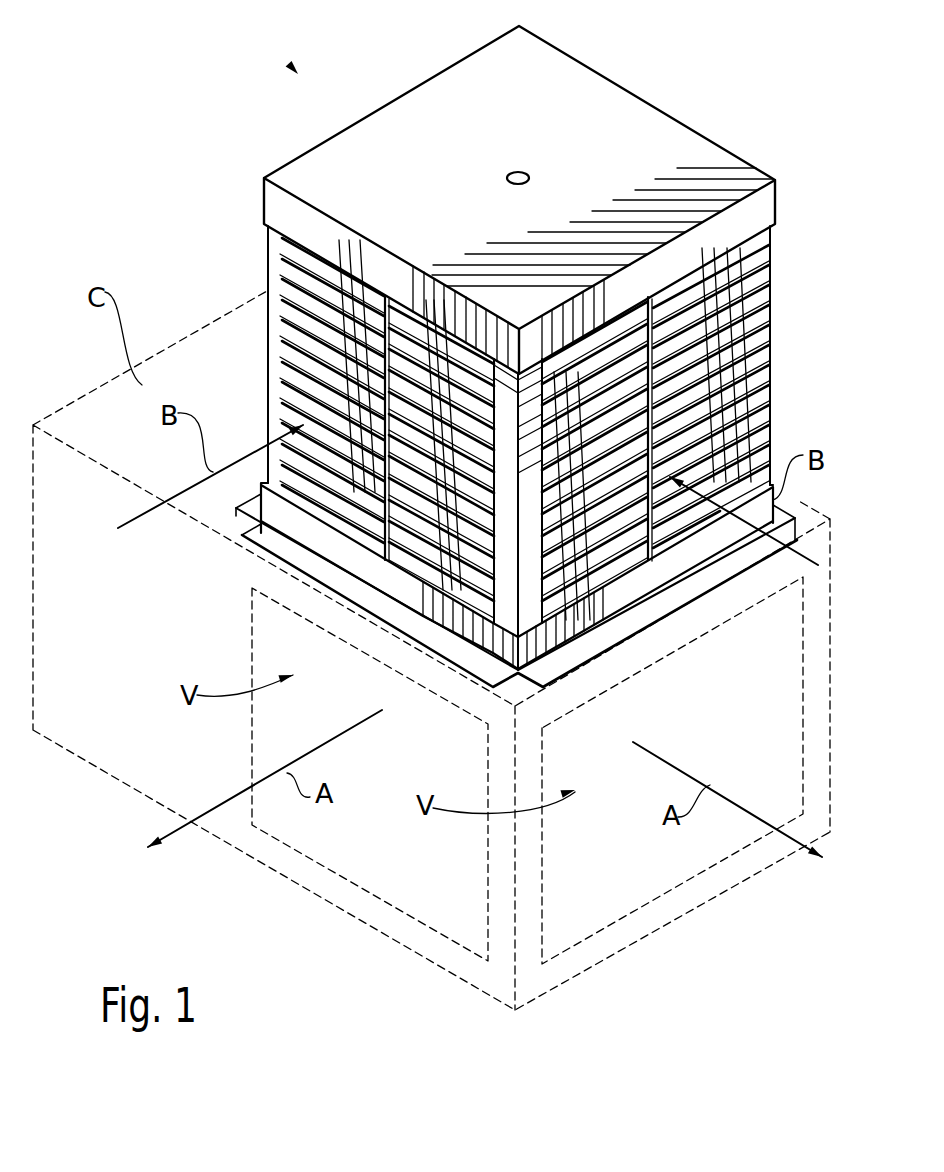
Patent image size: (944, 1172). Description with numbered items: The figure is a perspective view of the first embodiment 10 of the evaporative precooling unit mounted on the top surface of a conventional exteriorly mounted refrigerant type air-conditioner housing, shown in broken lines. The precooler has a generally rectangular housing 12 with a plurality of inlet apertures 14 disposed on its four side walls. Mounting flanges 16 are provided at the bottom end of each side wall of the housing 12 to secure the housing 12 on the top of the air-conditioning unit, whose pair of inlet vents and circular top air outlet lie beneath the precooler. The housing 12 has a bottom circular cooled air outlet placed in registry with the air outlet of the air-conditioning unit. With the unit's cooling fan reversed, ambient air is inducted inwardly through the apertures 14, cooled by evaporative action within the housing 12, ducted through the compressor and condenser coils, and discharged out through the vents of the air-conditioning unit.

The first embodiment 10 is at (298, 74).
The housing 12 is at (671, 140).
The inlet apertures 14 is at (273, 365).
The mounting flanges 16 is at (275, 540).